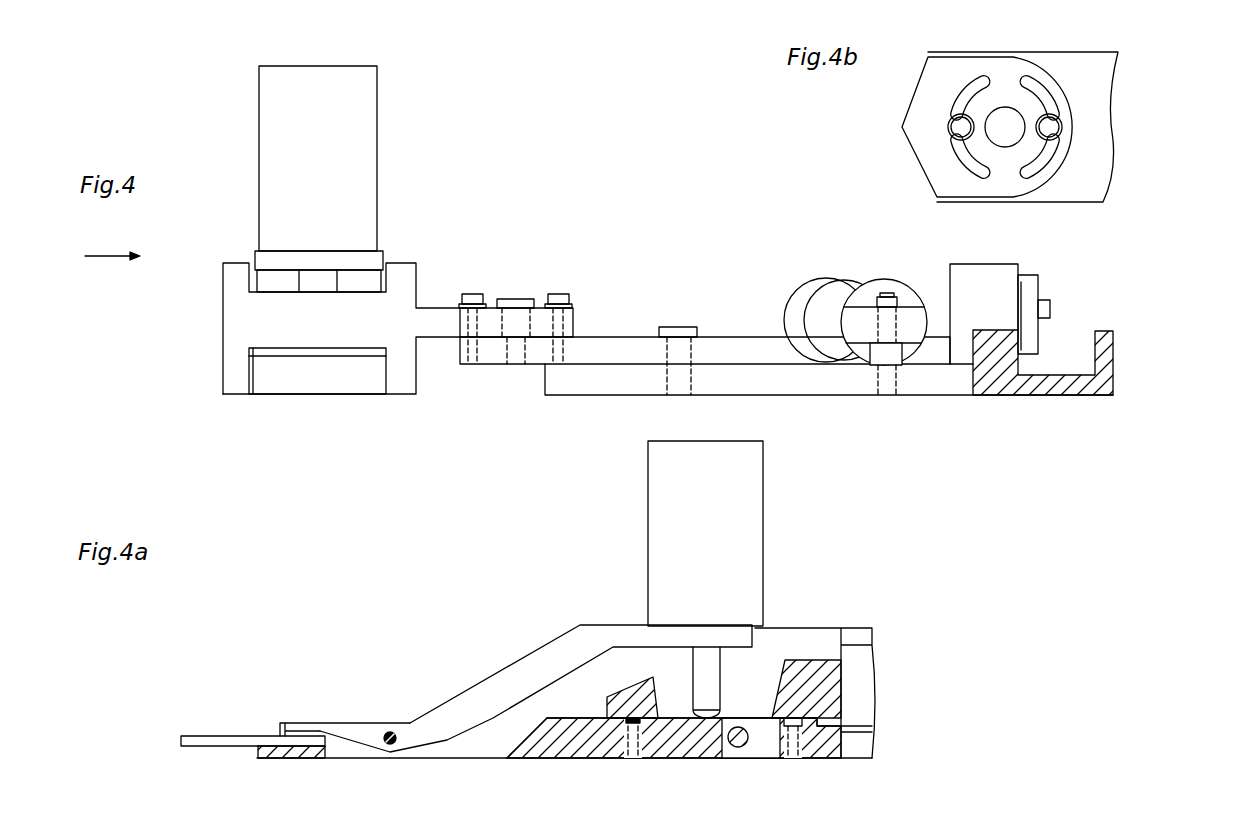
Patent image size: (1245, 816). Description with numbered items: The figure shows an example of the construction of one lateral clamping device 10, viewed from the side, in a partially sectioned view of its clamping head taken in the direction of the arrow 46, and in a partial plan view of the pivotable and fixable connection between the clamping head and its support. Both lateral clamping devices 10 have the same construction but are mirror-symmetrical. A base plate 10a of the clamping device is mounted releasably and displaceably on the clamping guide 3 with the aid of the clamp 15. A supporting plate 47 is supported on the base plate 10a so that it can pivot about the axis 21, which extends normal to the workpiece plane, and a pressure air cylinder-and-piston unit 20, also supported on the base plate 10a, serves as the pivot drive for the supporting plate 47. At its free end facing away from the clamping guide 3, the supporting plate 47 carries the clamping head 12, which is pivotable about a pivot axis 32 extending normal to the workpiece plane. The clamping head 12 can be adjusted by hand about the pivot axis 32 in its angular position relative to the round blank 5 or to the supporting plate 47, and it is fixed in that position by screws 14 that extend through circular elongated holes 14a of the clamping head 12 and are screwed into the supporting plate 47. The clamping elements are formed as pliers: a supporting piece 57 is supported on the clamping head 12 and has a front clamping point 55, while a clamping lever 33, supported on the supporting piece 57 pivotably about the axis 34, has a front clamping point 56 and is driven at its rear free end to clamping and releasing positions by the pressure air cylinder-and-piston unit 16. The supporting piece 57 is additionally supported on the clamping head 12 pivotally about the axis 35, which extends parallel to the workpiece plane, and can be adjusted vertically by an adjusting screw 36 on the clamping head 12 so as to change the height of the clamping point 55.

In FIG. 4, the clamping guide 3 is at (1105, 388).
In FIG. 4A, the round blank 5 is at (181, 738).
In FIG. 4, the lateral clamping device 10 is at (942, 402).
In FIG. 4, the base plate 10a is at (806, 383).
In FIG. 4, the clamping head 12 is at (235, 358).
In FIG. 4A, the clamping head 12 is at (830, 683).
In FIG. 4B, the clamping head 12 is at (930, 82).
In FIG. 4, the screws 14 is at (475, 296).
In FIG. 4B, the screws 14 is at (1052, 127).
In FIG. 4B, the circular elongated holes 14a is at (978, 163).
In FIG. 4, the clamp 15 is at (1030, 285).
In FIG. 4, the pressure air cylinder-and-piston unit 16 is at (340, 99).
In FIG. 4A, the pressure air cylinder-and-piston unit 16 is at (738, 501).
In FIG. 4, the pressure air cylinder-and-piston unit 20 is at (822, 305).
In FIG. 4, the axis 21 is at (677, 347).
In FIG. 4, the pivot axis 32 is at (508, 300).
In FIG. 4B, the pivot axis 32 is at (1010, 130).
In FIG. 4, the clamping lever 33 is at (370, 262).
In FIG. 4A, the clamping lever 33 is at (483, 690).
In FIG. 4A, the axis 34 is at (388, 733).
In FIG. 4A, the axis 35 is at (750, 742).
In FIG. 4A, the adjusting screw 36 is at (858, 725).
In FIG. 4, the arrow 46 is at (112, 245).
In FIG. 4, the supporting plate 47 is at (718, 343).
In FIG. 4B, the supporting plate 47 is at (1085, 78).
In FIG. 4A, the front clamping point 55 is at (270, 746).
In FIG. 4A, the front clamping point 56 is at (283, 726).
In FIG. 4A, the supporting piece 57 is at (575, 737).